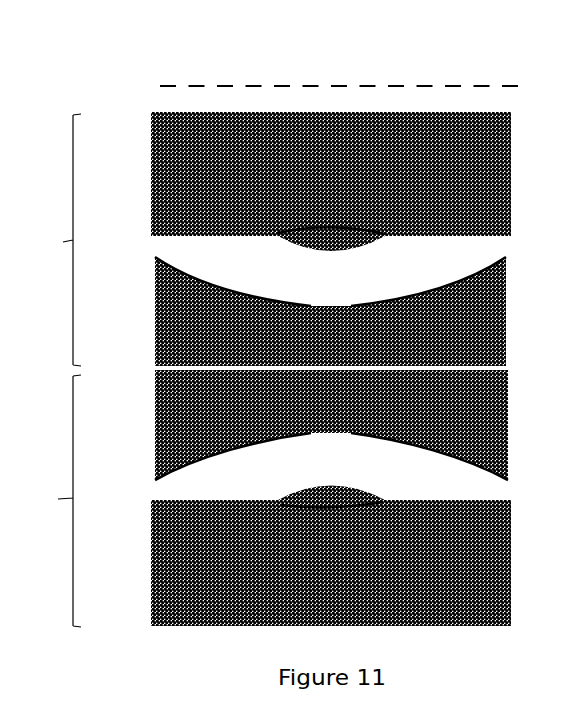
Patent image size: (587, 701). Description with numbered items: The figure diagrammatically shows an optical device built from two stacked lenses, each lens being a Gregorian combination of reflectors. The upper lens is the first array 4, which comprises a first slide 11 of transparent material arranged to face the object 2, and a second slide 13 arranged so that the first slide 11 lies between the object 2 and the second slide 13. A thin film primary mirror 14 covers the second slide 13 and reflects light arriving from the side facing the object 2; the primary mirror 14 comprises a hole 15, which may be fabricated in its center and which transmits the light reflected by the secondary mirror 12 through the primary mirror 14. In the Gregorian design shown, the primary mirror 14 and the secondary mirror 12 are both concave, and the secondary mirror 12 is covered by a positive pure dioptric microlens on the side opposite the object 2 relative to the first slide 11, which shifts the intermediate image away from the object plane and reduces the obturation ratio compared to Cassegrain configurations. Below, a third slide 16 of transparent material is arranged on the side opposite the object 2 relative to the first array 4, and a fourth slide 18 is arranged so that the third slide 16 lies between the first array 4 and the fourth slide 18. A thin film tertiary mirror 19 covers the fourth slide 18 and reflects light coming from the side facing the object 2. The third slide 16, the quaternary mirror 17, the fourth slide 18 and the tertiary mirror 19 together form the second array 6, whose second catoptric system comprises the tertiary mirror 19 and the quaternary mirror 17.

The object 2 is at (275, 78).
The first array 4 is at (58, 240).
The second array 6 is at (60, 501).
The first slide 11 is at (155, 153).
The secondary mirror 12 is at (270, 225).
The second slide 13 is at (165, 308).
The primary mirror 14 is at (237, 287).
The hole 15 is at (310, 300).
The third slide 16 is at (162, 422).
The quaternary mirror 17 is at (215, 443).
The fourth slide 18 is at (183, 583).
The tertiary mirror 19 is at (280, 494).